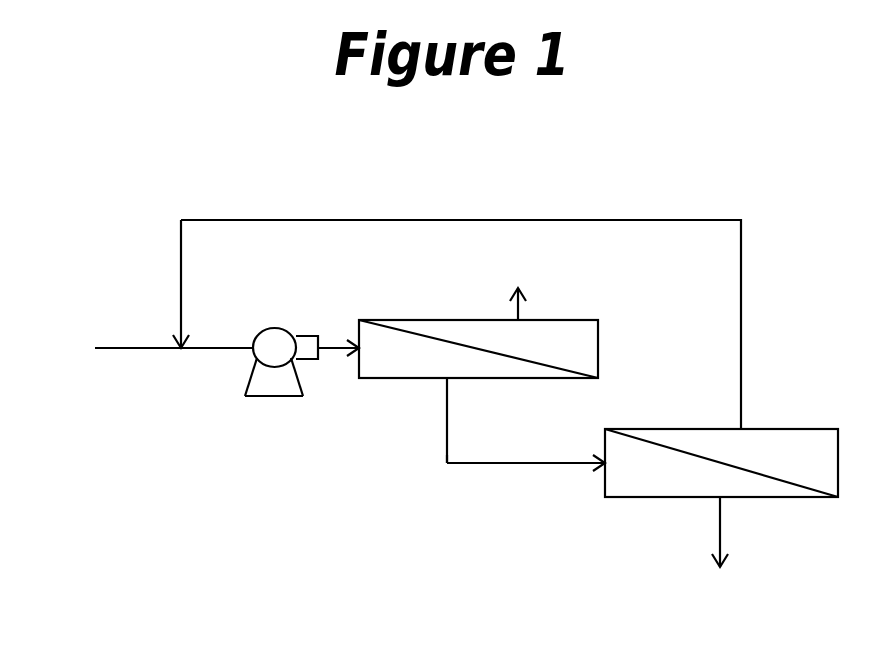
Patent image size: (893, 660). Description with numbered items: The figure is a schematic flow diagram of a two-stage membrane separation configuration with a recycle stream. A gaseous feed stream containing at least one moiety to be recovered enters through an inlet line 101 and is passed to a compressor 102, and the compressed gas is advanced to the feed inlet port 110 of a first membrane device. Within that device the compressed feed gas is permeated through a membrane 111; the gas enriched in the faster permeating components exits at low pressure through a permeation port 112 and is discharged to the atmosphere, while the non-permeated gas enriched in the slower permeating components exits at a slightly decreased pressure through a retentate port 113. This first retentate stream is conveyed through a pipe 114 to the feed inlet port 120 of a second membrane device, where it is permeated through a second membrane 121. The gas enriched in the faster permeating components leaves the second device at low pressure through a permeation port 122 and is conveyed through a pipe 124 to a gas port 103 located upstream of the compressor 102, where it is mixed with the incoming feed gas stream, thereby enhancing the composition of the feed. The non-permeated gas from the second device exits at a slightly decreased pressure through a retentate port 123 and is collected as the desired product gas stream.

The inlet line 101 is at (150, 348).
The compressor 102 is at (281, 362).
The gas port 103 is at (202, 284).
The feed inlet port 110 is at (340, 335).
The membrane 111 is at (478, 349).
The permeation port 112 is at (542, 304).
The retentate port 113 is at (472, 420).
The pipe 114 is at (447, 443).
The feed inlet port 120 is at (526, 451).
The membrane 121 is at (721, 463).
The permeation port 122 is at (766, 402).
The retentate port 123 is at (726, 570).
The pipe 124 is at (739, 315).